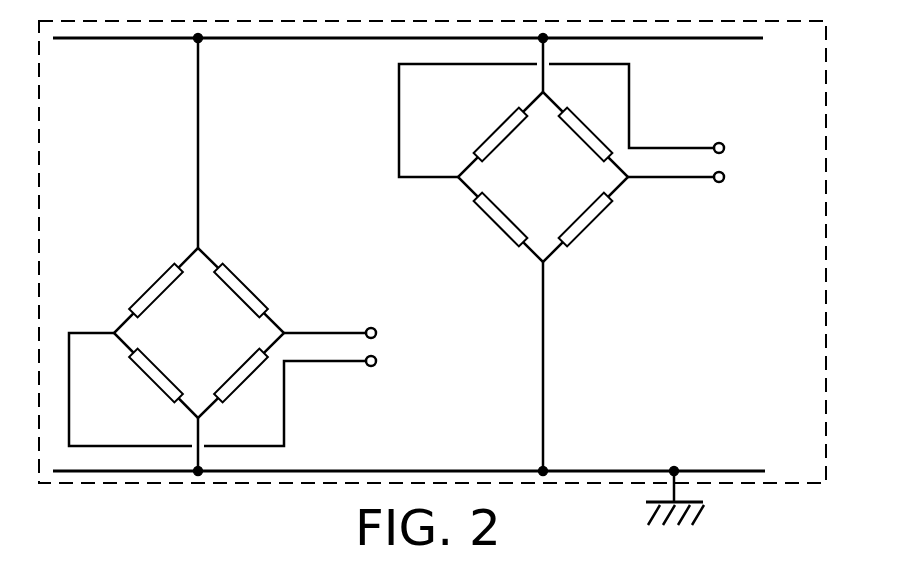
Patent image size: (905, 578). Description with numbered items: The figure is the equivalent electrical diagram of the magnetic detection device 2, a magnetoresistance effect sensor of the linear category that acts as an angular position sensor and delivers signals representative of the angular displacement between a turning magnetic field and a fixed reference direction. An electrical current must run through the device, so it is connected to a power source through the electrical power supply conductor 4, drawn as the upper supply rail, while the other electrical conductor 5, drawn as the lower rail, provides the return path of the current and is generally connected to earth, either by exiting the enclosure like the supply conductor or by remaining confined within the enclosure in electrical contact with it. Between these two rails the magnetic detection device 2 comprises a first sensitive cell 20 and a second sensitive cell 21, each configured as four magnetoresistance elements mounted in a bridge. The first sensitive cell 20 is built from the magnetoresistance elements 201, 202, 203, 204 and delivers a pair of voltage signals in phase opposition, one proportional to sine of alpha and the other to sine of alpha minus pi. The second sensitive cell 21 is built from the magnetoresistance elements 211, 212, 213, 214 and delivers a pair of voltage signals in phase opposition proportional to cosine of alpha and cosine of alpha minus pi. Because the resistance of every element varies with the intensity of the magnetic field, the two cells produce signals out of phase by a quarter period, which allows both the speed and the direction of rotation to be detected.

The magnetic detection device 2 is at (152, 483).
The electrical power supply conductor 4 is at (125, 42).
The other electrical conductor 5 is at (610, 468).
The first sensitive cell 20 is at (612, 254).
The second sensitive cell 21 is at (273, 254).
The magnetoresistance element 201 is at (497, 133).
The magnetoresistance element 202 is at (582, 143).
The magnetoresistance element 203 is at (587, 222).
The magnetoresistance element 204 is at (500, 230).
The magnetoresistance element 211 is at (137, 298).
The magnetoresistance element 212 is at (240, 288).
The magnetoresistance element 213 is at (240, 377).
The magnetoresistance element 214 is at (157, 385).